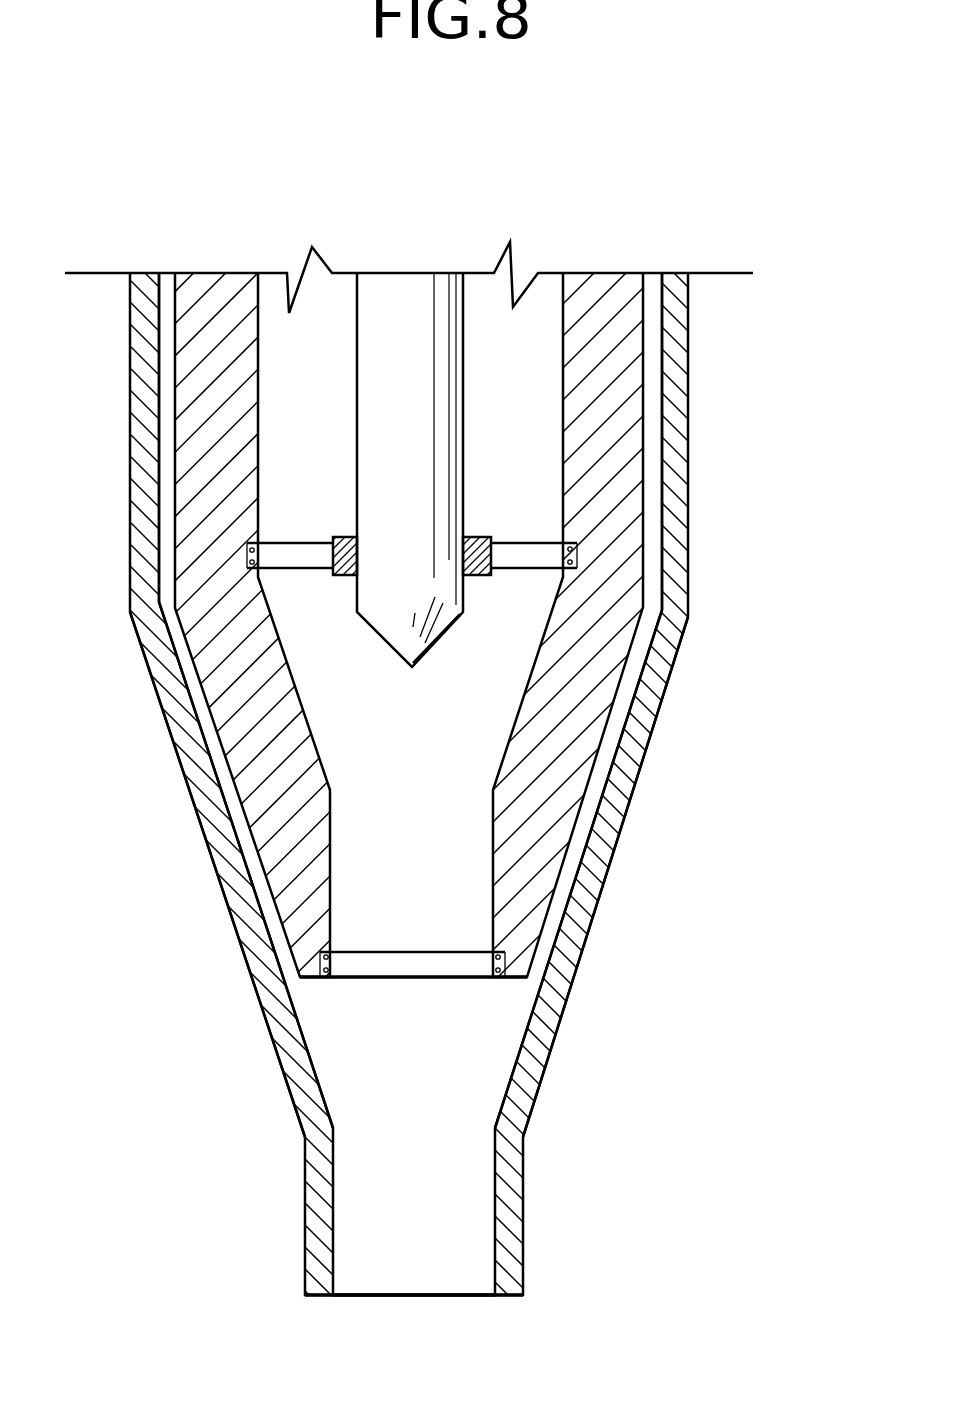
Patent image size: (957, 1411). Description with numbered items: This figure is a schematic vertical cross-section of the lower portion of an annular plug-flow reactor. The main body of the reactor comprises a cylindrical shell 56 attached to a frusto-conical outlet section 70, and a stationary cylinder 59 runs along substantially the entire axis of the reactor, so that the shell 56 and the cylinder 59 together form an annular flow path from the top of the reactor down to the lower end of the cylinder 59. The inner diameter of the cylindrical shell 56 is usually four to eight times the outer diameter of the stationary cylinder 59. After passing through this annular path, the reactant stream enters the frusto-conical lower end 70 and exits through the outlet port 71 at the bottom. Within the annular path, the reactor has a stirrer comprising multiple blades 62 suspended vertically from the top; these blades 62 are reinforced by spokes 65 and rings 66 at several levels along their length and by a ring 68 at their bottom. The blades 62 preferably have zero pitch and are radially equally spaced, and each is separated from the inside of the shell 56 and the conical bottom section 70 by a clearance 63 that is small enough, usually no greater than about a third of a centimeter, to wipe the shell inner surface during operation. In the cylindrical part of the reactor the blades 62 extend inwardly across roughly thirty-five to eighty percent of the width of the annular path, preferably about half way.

The cylindrical shell 56 is at (673, 445).
The stationary cylinder 59 is at (418, 295).
The blades 62 is at (605, 597).
The clearance 63 is at (653, 377).
The spokes 65 is at (532, 557).
The rings 66 is at (487, 537).
The ring 68 is at (455, 967).
The frusto-conical outlet section 70 is at (590, 882).
The outlet port 71 is at (437, 1265).